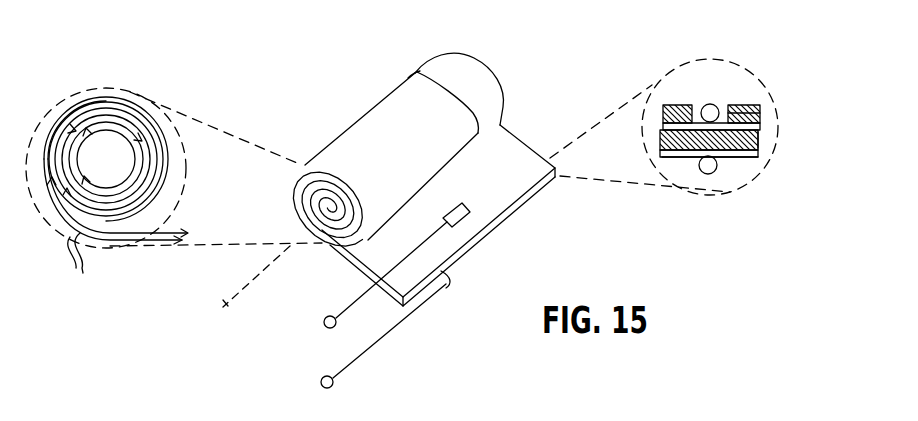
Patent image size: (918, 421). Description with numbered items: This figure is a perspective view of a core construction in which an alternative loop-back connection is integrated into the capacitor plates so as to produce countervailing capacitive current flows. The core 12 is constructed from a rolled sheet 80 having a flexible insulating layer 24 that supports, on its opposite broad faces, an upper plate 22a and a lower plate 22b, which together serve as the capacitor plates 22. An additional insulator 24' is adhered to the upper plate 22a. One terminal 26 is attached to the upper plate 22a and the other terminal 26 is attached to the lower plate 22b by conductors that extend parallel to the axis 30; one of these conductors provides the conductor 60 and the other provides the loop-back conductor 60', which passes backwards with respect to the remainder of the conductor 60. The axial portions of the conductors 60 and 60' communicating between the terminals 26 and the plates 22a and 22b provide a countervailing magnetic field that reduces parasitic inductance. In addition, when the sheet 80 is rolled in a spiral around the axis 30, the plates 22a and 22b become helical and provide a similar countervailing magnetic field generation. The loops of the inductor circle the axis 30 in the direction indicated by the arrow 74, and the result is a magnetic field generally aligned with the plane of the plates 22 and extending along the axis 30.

The core 12 is at (355, 67).
The plates 22 is at (83, 268).
The upper plate 22a is at (722, 105).
The lower plate 22b is at (735, 158).
The flexible insulating layer 24 is at (789, 139).
The additional insulator 24' is at (767, 76).
The terminals 26 is at (337, 325).
The axis 30 is at (220, 305).
The conductor 60 is at (394, 166).
The loop-back conductor 60' is at (416, 205).
The arrow 74 is at (412, 72).
The rolled sheet 80 is at (500, 195).